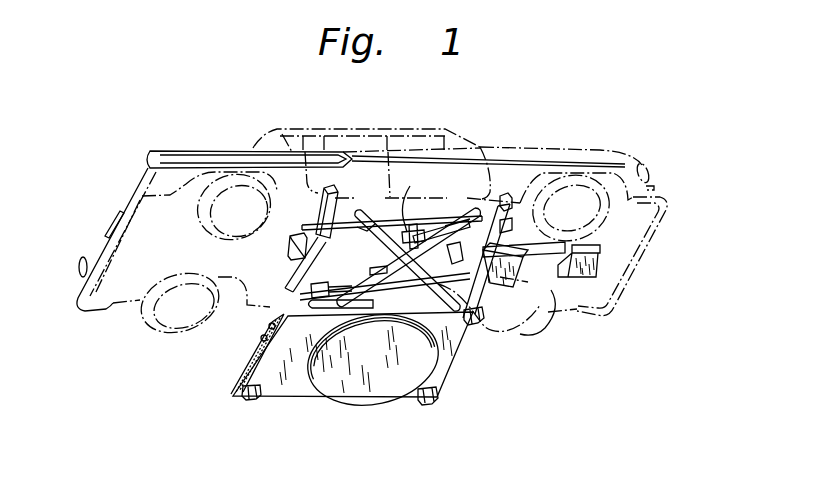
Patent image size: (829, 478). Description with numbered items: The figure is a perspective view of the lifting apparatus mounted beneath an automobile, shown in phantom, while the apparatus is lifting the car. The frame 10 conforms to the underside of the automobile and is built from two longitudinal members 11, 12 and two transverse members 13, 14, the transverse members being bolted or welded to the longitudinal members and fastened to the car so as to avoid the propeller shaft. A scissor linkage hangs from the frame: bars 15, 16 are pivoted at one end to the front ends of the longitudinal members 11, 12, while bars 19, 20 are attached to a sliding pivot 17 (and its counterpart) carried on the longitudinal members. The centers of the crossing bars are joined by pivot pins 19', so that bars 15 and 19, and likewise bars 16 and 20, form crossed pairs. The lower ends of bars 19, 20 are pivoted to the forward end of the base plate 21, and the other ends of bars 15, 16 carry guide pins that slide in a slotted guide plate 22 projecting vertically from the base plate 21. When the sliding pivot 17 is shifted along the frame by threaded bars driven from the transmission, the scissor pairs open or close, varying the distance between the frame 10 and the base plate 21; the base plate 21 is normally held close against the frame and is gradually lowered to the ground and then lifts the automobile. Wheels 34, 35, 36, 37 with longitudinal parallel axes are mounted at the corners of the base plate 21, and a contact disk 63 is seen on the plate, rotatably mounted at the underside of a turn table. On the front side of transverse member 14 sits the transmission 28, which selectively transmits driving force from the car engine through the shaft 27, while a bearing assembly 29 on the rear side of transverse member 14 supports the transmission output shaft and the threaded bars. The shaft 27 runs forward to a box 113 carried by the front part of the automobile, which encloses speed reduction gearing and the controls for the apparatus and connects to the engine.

The frame 10 is at (281, 256).
The longitudinal member 11 is at (364, 222).
The longitudinal member 12 is at (305, 262).
The transverse member 13 is at (316, 199).
The transverse member 14 is at (508, 215).
The bar 15 is at (454, 226).
The bar 16 is at (427, 322).
The sliding pivot 17 is at (358, 228).
The bar 19 is at (409, 257).
The pivot pin 19' is at (414, 197).
The bar 20 is at (325, 288).
The base plate 21 is at (458, 364).
The slotted guide plate 22 is at (373, 320).
The shaft 27 is at (518, 284).
The transmission 28 is at (492, 290).
The bearing assembly 29 is at (500, 246).
The wheel 34 is at (427, 405).
The wheel 35 is at (250, 403).
The wheel 36 is at (287, 312).
The wheel 37 is at (473, 331).
The contact disk 63 is at (374, 389).
The box 113 is at (597, 264).